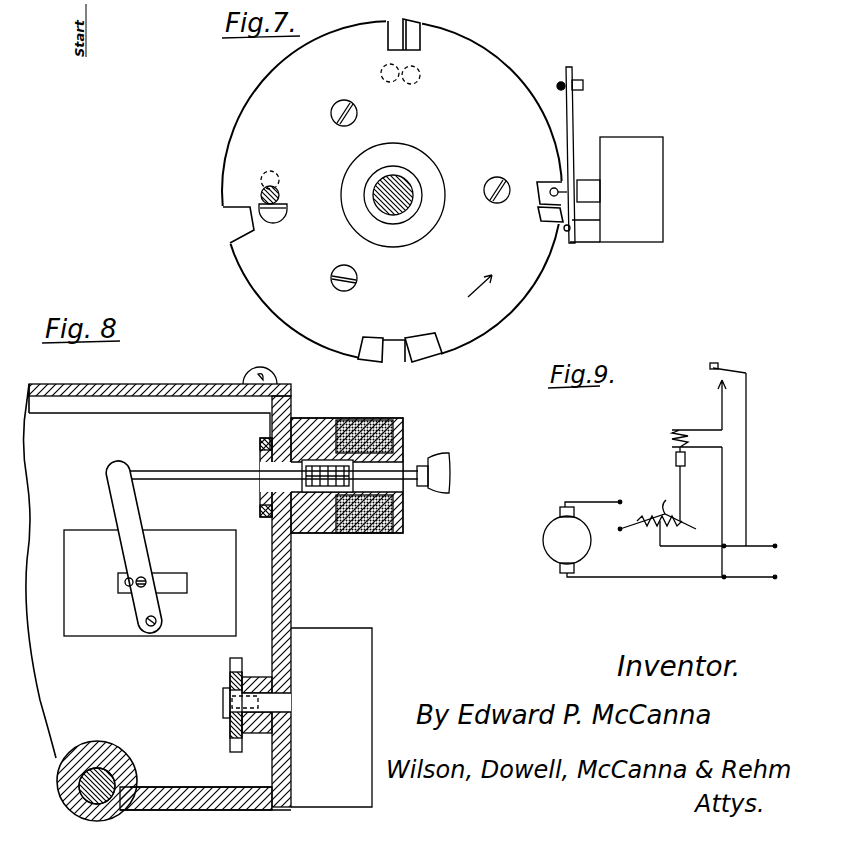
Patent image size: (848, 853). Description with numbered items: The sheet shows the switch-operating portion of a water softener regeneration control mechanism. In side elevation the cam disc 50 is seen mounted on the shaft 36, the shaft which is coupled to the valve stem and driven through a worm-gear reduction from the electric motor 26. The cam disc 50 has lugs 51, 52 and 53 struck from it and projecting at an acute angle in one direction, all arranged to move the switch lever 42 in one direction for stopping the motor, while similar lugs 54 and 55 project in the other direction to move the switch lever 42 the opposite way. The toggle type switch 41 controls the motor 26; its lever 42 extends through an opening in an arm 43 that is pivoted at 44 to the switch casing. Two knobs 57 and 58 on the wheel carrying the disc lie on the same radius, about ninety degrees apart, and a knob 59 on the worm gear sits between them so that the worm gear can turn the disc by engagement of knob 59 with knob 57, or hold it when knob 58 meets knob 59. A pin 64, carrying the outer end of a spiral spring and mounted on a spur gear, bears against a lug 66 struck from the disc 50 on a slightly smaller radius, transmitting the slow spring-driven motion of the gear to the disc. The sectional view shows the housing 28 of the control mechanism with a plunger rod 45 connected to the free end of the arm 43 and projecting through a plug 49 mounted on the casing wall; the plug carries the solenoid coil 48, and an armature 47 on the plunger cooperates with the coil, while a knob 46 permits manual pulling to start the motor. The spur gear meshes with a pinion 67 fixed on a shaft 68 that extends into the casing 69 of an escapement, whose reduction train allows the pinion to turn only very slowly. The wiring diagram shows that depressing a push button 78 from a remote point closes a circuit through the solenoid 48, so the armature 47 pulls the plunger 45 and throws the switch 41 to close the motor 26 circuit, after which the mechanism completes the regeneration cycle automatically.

In FIG. 9, the electric motor 26 is at (553, 562).
In FIG. 8, the housing 28 is at (287, 590).
In FIG. 7, the shaft 36 is at (405, 186).
In FIG. 7, the toggle type switch 41 is at (645, 197).
In FIG. 8, the toggle type switch 41 is at (192, 632).
In FIG. 9, the toggle type switch 41 is at (657, 507).
In FIG. 7, the switch lever 42 is at (550, 183).
In FIG. 8, the switch lever 42 is at (129, 578).
In FIG. 7, the arm 43 is at (574, 118).
In FIG. 8, the arm 43 is at (135, 516).
In FIG. 7, the pivot 44 is at (568, 240).
In FIG. 8, the pivot 44 is at (150, 628).
In FIG. 7, the plunger rod 45 is at (557, 86).
In FIG. 8, the plunger rod 45 is at (197, 471).
In FIG. 9, the plunger rod 45 is at (683, 496).
In FIG. 8, the knob 46 is at (450, 463).
In FIG. 8, the armature 47 is at (328, 494).
In FIG. 9, the armature 47 is at (676, 459).
In FIG. 8, the solenoid coil 48 is at (372, 420).
In FIG. 9, the solenoid coil 48 is at (671, 439).
In FIG. 8, the plug 49 is at (302, 419).
In FIG. 7, the cam disc 50 is at (500, 66).
In FIG. 7, the lug 51 is at (536, 211).
In FIG. 7, the lug 52 is at (372, 340).
In FIG. 7, the lug 53 is at (413, 30).
In FIG. 7, the lug 54 is at (425, 349).
In FIG. 7, the lug 55 is at (226, 225).
In FIG. 7, the knob 57 is at (278, 171).
In FIG. 7, the knob 58 is at (418, 71).
In FIG. 7, the knob 59 is at (382, 69).
In FIG. 7, the pin 64 is at (280, 193).
In FIG. 7, the lug 66 is at (288, 214).
In FIG. 8, the pinion 67 is at (234, 748).
In FIG. 8, the shaft 68 is at (286, 700).
In FIG. 8, the escapement casing 69 is at (359, 661).
In FIG. 9, the push button 78 is at (737, 365).